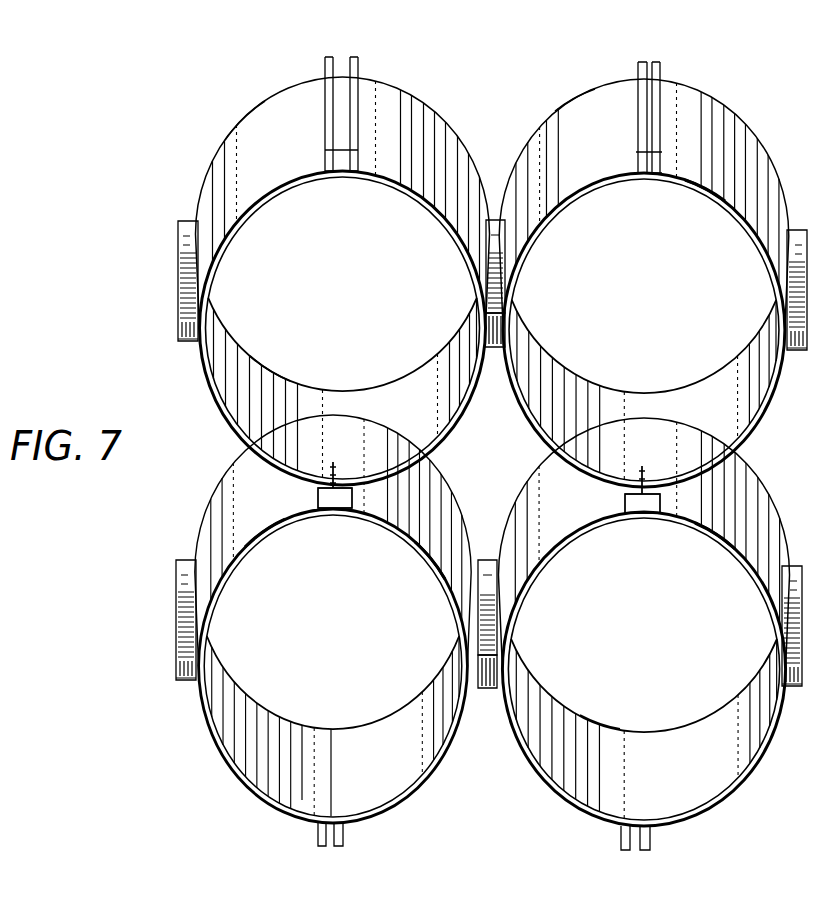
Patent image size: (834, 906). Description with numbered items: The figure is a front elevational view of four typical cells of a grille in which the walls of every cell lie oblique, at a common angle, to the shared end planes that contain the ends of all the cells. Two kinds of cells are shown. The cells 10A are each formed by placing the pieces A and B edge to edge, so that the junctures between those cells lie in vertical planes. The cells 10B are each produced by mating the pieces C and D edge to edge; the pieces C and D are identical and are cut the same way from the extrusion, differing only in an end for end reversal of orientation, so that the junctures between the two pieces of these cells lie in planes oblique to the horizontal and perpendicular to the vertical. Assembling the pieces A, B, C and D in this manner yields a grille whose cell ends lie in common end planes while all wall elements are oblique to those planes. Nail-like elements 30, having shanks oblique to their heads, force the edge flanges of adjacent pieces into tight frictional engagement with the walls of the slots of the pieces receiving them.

The cell 10A is at (733, 98).
The cell 10B is at (449, 105).
The nail-like element 30 is at (497, 330).
The piece A is at (578, 99).
The piece B is at (705, 198).
The piece C is at (243, 115).
The piece D is at (271, 359).